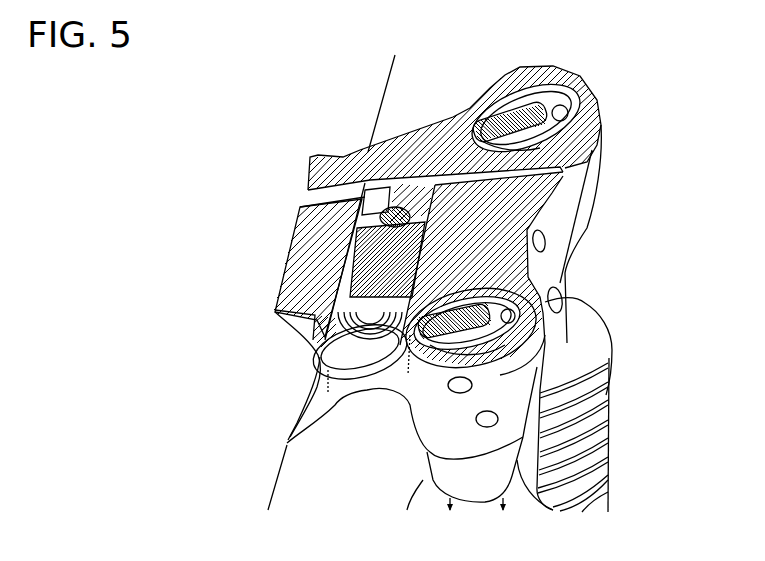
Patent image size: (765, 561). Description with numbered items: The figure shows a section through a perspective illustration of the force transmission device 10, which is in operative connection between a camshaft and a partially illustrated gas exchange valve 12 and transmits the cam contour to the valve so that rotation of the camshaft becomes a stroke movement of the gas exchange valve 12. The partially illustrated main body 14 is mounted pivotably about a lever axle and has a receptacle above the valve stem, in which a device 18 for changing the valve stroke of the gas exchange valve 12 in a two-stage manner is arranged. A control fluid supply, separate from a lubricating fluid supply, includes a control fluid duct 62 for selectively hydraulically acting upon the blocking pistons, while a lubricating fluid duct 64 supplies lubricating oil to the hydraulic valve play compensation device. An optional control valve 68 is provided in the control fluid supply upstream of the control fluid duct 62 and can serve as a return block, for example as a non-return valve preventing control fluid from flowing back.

The force transmission device 10 is at (246, 222).
The main body 14 is at (320, 157).
The control valve 68 is at (320, 244).
The device for changing a valve stroke 18 is at (588, 95).
The control fluid duct 62 is at (563, 247).
The lubricating fluid duct 64 is at (565, 304).
The gas exchange valve 12 is at (603, 476).